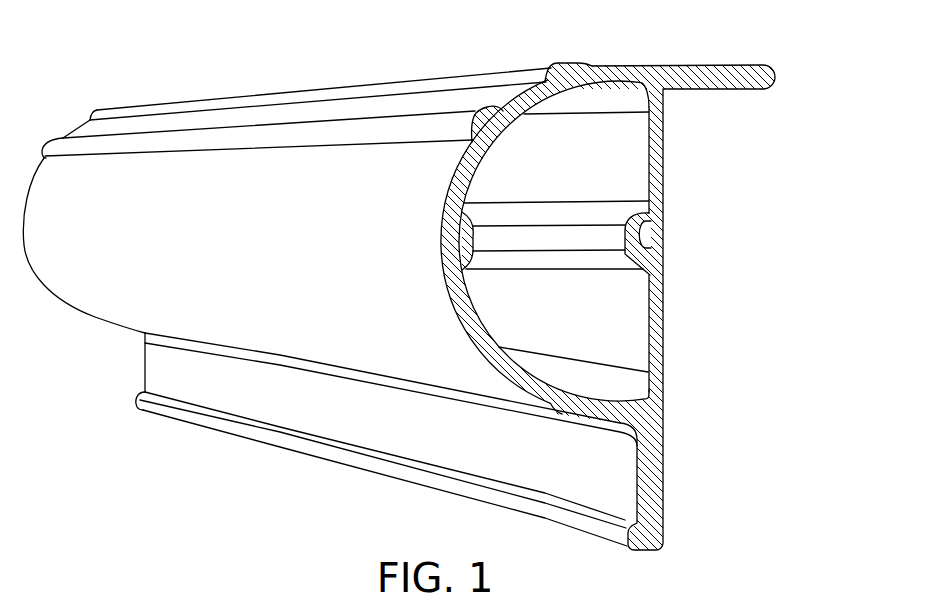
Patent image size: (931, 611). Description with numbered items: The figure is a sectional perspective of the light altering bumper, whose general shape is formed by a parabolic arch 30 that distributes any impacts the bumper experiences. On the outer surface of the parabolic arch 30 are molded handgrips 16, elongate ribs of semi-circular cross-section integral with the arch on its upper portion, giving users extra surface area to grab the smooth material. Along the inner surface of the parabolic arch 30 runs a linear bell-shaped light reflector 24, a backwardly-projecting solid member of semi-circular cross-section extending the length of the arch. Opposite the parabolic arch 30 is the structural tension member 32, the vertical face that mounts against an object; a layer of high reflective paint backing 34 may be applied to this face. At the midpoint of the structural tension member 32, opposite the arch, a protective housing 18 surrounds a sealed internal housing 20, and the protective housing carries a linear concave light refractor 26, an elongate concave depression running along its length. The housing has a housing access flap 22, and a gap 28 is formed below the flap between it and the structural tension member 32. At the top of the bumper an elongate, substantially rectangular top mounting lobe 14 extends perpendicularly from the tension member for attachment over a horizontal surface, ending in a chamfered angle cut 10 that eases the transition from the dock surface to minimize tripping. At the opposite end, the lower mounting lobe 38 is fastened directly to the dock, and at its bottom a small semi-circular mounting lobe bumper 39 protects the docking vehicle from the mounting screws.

The chamfered angle cut 10 is at (774, 74).
The top mounting lobe 14 is at (723, 77).
The molded handgrip 16 is at (569, 60).
The protective housing 18 is at (664, 206).
The sealed internal housing 20 is at (648, 236).
The housing access flap 22 is at (660, 250).
The linear bell-shaped light reflector 24 is at (470, 265).
The linear concave light refractor 26 is at (612, 240).
The gap 28 is at (660, 260).
The parabolic arch 30 is at (475, 178).
The structural tension member 32 is at (665, 300).
The high reflective paint backing 34 is at (664, 402).
The lower mounting lobe 38 is at (664, 523).
The mounting lobe bumper 39 is at (626, 541).